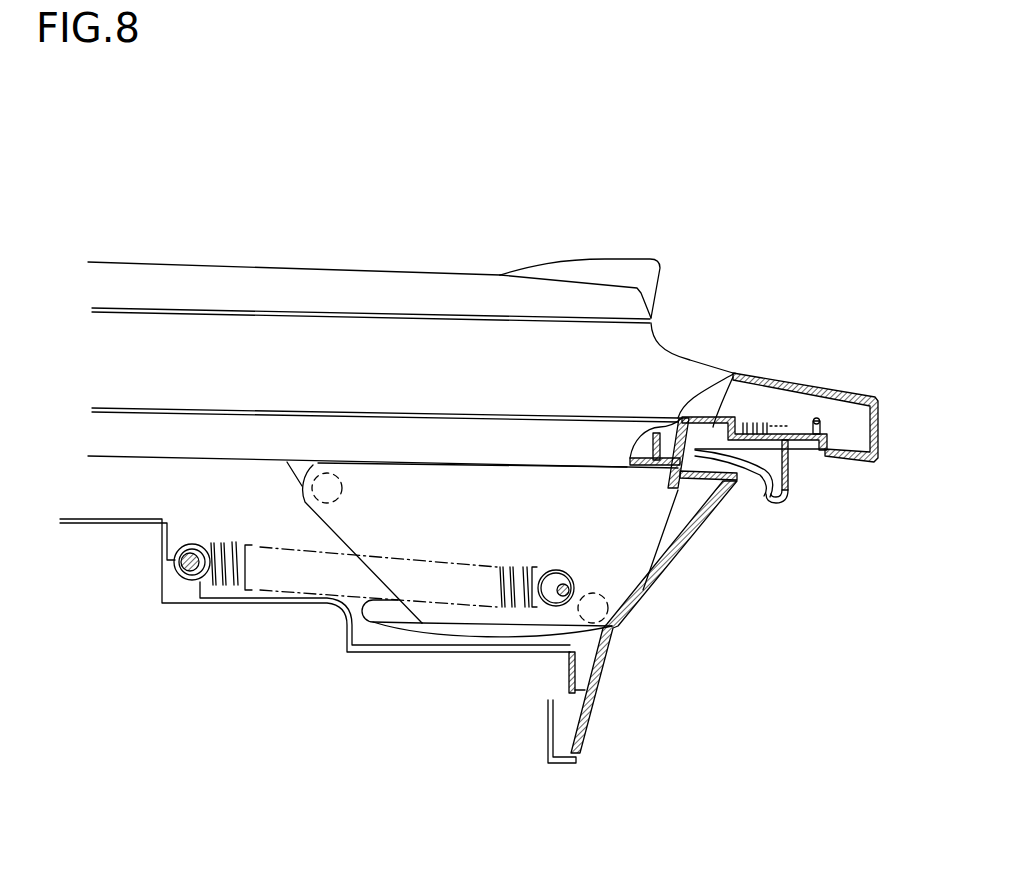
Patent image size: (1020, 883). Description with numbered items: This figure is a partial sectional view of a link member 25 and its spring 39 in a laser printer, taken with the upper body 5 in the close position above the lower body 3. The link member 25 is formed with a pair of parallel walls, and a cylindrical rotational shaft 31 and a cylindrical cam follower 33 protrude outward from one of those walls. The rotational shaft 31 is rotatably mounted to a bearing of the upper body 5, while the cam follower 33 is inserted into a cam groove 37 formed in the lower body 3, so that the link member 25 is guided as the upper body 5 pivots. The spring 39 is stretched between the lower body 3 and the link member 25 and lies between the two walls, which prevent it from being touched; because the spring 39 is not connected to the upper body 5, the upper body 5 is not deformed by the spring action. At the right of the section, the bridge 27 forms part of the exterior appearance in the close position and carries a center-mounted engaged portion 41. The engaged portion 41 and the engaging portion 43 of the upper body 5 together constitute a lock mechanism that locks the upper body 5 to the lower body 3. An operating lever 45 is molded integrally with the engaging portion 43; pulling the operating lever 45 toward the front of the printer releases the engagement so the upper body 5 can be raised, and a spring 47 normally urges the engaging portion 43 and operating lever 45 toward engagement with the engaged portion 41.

The lower body 3 is at (372, 657).
The upper body 5 is at (390, 283).
The link member 25 is at (600, 545).
The bridge 27 is at (683, 550).
The rotational shaft 31 is at (308, 498).
The cam follower 33 is at (618, 627).
The cam groove 37 is at (400, 625).
The spring 39 is at (233, 588).
The engaged portion 41 is at (735, 376).
The engaging portion 43 is at (752, 470).
The operating lever 45 is at (773, 498).
The spring 47 is at (802, 418).